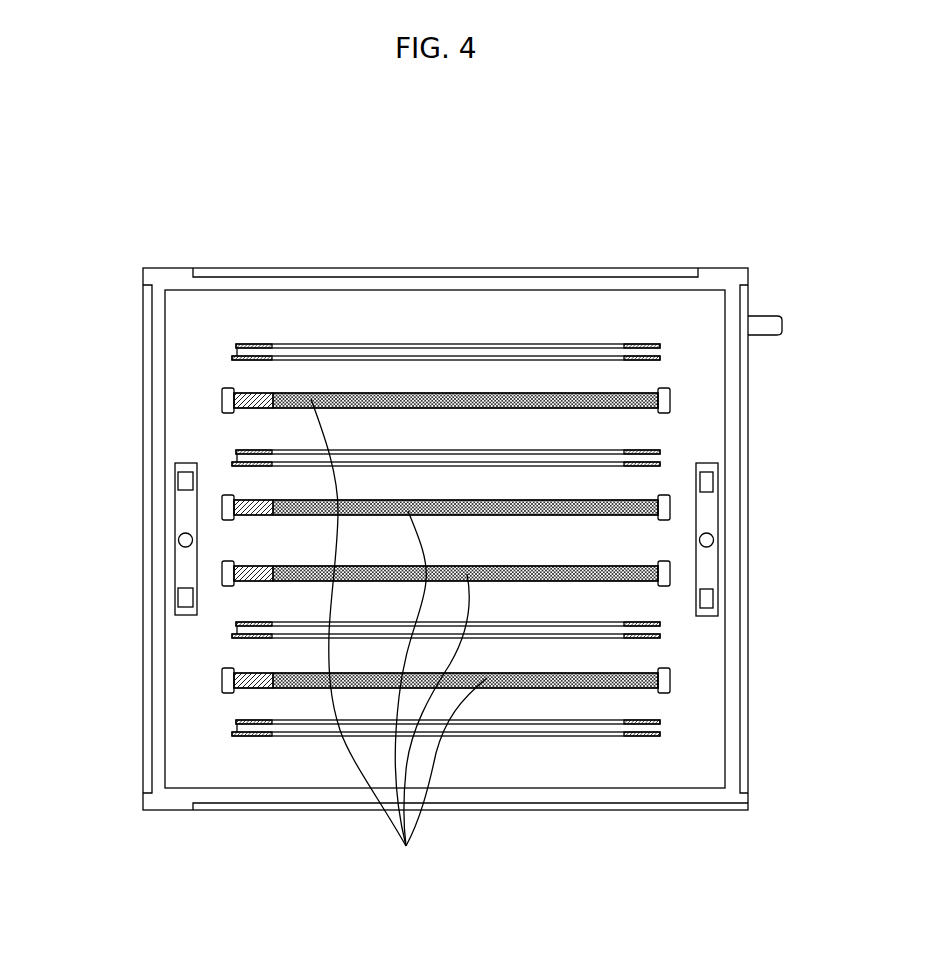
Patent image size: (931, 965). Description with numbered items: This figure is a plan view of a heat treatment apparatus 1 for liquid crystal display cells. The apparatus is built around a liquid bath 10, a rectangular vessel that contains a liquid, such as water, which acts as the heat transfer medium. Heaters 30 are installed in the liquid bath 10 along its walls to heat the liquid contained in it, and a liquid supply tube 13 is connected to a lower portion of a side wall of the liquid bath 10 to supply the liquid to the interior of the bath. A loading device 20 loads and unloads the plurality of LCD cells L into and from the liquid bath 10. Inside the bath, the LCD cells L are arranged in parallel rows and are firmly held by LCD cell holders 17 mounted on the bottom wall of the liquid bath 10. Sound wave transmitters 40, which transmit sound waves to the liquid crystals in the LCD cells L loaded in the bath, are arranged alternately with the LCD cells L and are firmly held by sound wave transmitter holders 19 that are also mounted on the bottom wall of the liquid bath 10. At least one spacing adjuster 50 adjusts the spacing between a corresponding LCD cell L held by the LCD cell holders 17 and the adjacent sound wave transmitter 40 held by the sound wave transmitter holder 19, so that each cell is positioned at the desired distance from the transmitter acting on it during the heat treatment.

The heat treatment apparatus 1 is at (434, 202).
The liquid bath 10 is at (752, 271).
The heaters 30 is at (683, 281).
The liquid supply tube 13 is at (768, 336).
The loading device 20 is at (718, 460).
The sound wave transmitters 40 is at (328, 342).
The sound wave transmitter holders 19 is at (234, 344).
The LCD cell holders 17 is at (226, 389).
The spacing adjuster 50 is at (218, 406).
The LCD cells L is at (399, 635).